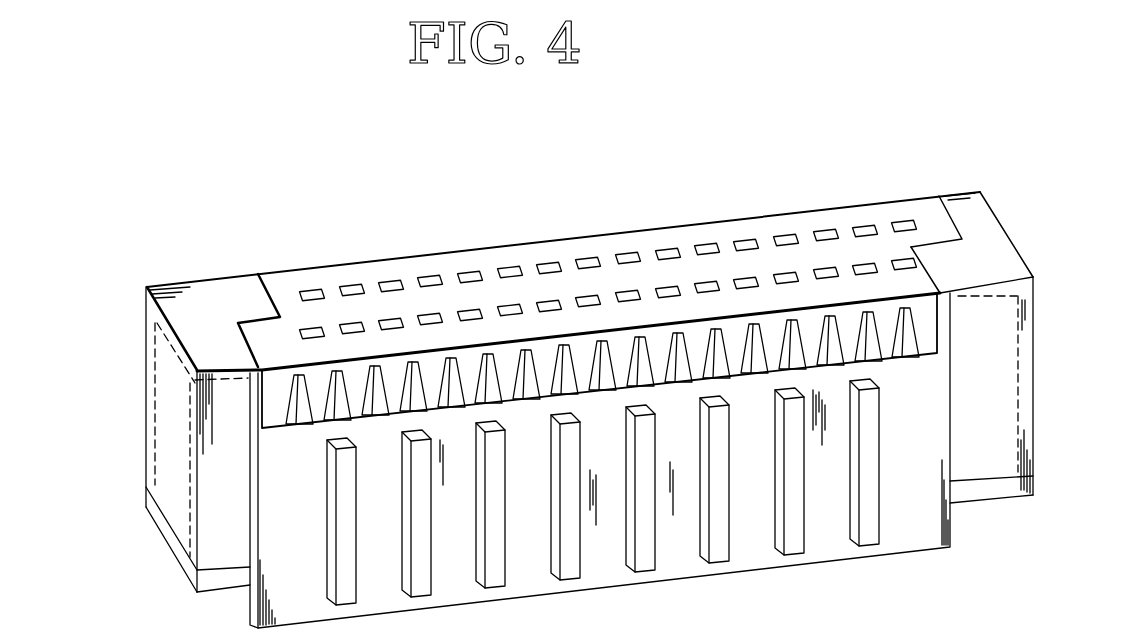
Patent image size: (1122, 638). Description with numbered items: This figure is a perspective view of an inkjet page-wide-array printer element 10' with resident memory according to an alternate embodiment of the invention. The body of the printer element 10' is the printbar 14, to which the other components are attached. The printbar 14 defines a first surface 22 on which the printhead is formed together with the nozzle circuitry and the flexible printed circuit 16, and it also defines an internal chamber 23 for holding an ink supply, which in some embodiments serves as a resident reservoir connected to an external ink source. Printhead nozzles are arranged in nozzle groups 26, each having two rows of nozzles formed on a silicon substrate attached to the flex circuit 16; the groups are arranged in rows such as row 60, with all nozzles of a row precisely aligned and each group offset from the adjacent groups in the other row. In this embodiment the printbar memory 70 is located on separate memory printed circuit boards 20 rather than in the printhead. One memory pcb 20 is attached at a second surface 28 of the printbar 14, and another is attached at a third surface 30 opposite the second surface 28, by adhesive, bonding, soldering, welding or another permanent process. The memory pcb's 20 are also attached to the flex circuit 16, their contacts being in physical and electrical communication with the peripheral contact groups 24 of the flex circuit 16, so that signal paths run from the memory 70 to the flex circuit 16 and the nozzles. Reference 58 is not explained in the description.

The printer element 10' is at (590, 220).
The printbar 14 is at (1018, 390).
The flexible printed circuit 16 is at (944, 292).
The memory printed circuit board 20 is at (951, 423).
The first surface 22 is at (214, 329).
The internal chamber 23 is at (152, 353).
The peripheral contact groups 24 is at (298, 414).
The nozzle group 26 is at (306, 328).
The second surface 28 is at (232, 492).
The third surface 30 is at (167, 433).
The step notch 58 is at (930, 220).
The row 60 is at (928, 260).
The printbar memory 70 is at (353, 513).